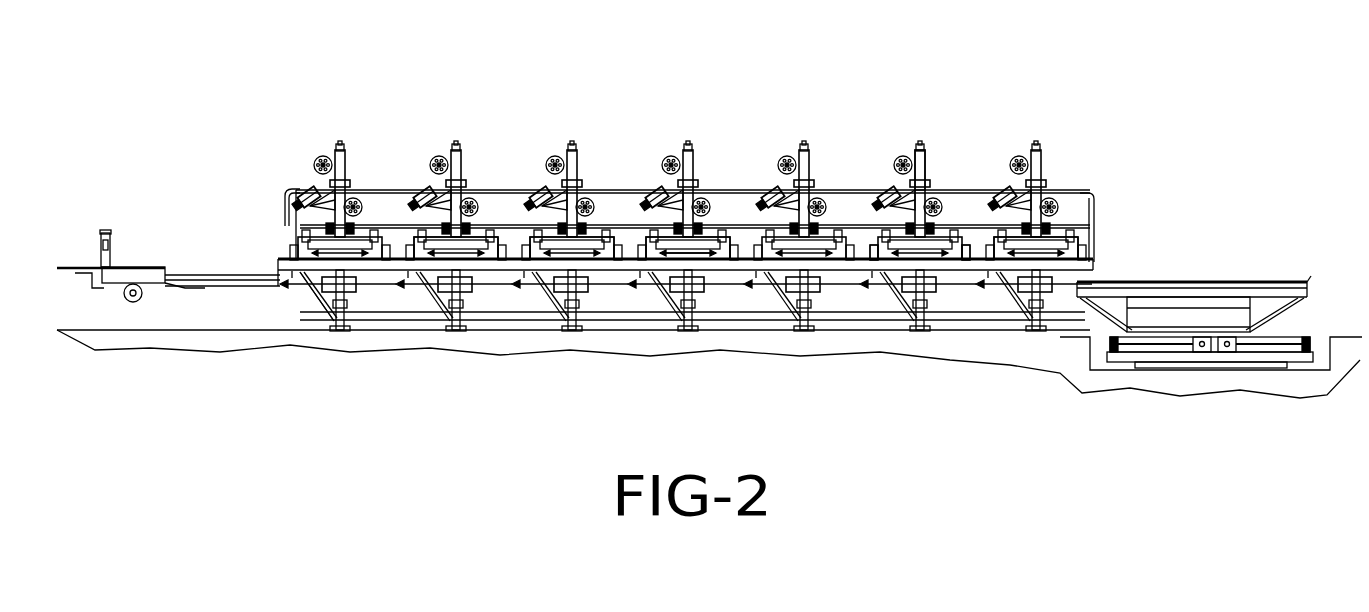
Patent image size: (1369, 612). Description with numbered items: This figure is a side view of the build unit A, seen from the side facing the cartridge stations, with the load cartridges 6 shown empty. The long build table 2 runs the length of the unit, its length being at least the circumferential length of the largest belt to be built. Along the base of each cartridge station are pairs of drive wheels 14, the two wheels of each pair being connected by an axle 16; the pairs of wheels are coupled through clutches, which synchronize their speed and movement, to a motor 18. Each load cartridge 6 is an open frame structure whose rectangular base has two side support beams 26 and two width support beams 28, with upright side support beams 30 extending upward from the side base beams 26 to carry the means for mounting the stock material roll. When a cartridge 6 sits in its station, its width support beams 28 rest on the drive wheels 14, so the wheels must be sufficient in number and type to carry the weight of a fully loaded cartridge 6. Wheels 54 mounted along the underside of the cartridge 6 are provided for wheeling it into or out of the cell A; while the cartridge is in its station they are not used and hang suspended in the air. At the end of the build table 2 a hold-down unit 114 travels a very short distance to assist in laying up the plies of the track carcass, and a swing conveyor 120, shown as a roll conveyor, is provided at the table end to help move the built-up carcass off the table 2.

The build table 2 is at (1256, 264).
The load cartridge 6 is at (352, 150).
The drive wheels 14 is at (538, 260).
The axle 16 is at (438, 260).
The motor 18 is at (319, 284).
The side support beams 26 is at (1047, 243).
The width support beams 28 is at (887, 247).
The side support beams 30 is at (916, 168).
The wheels 54 is at (673, 247).
The hold-down unit 114 is at (105, 240).
The swing conveyor 120 is at (65, 267).
The build unit A is at (1192, 128).